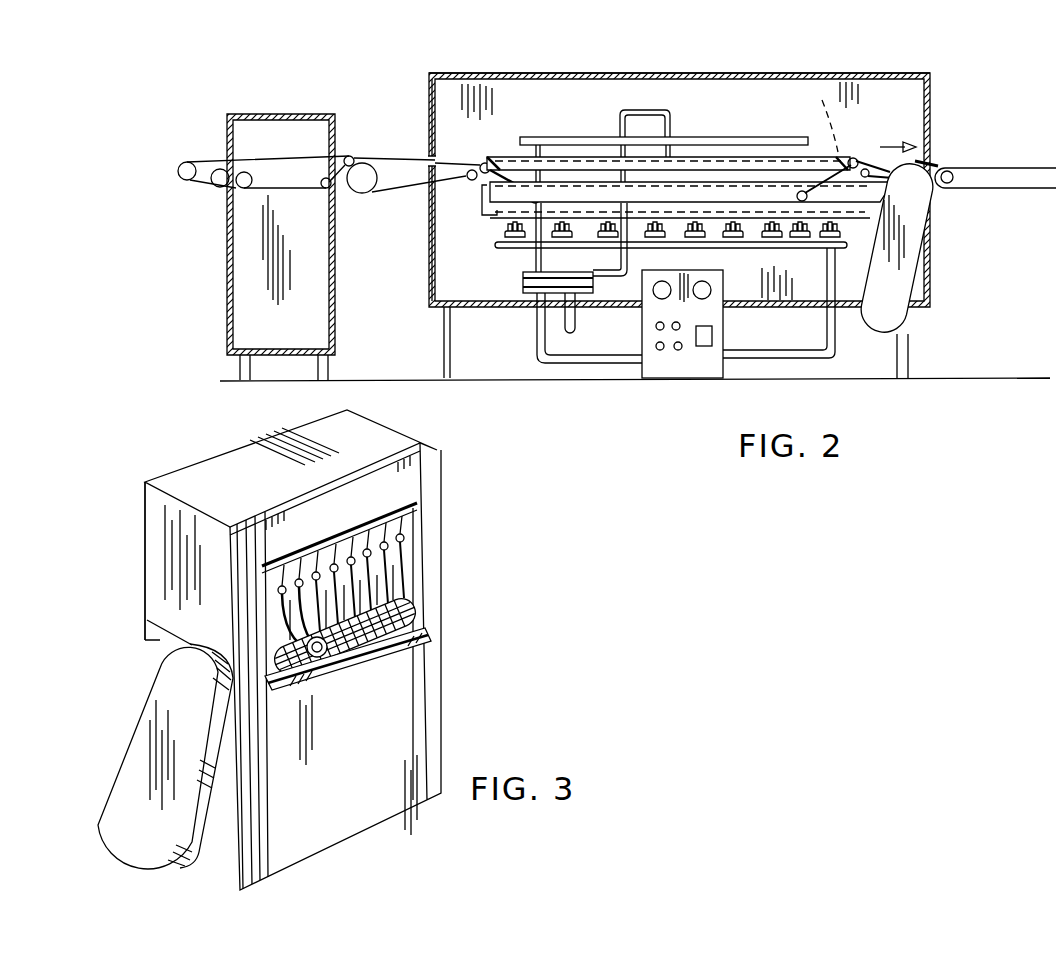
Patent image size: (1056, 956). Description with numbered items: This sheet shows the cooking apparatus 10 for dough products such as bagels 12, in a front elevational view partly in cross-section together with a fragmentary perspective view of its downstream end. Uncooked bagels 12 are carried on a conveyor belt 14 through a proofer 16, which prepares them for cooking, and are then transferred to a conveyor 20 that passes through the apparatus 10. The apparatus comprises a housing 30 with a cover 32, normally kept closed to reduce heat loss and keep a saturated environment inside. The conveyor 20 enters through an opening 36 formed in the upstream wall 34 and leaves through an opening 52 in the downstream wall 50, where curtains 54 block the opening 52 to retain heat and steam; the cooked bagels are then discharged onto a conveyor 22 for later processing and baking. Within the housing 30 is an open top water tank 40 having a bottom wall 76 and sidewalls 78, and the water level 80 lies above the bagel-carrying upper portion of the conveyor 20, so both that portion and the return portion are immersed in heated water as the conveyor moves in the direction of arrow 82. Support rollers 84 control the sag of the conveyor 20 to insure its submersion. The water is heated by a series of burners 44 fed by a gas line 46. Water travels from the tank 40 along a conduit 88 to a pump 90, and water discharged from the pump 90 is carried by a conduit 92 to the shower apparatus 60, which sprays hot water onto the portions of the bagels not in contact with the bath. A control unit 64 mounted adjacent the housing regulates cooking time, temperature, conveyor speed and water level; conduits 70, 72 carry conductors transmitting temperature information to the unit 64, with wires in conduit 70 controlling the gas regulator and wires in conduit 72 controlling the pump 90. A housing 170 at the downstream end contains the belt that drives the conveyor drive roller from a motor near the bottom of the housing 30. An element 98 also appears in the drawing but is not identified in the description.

In FIG. 2, the cooking apparatus 10 is at (833, 72).
In FIG. 3, the bagels 12 is at (324, 680).
In FIG. 2, the conveyor belt 14 is at (199, 157).
In FIG. 2, the proofer 16 is at (227, 245).
In FIG. 2, the conveyor 20 is at (388, 158).
In FIG. 3, the conveyor 20 is at (418, 620).
In FIG. 2, the conveyor 22 is at (998, 167).
In FIG. 2, the housing 30 is at (429, 270).
In FIG. 3, the housing 30 is at (150, 647).
In FIG. 2, the cover 32 is at (428, 92).
In FIG. 3, the cover 32 is at (372, 440).
In FIG. 2, the upstream wall 34 is at (429, 222).
In FIG. 2, the opening 36 is at (428, 158).
In FIG. 2, the water tank 40 is at (873, 222).
In FIG. 2, the burners 44 is at (753, 237).
In FIG. 2, the gas line 46 is at (762, 240).
In FIG. 3, the downstream wall 50 is at (437, 482).
In FIG. 2, the opening 52 is at (932, 148).
In FIG. 3, the opening 52 is at (301, 589).
In FIG. 3, the curtains 54 is at (392, 564).
In FIG. 2, the shower apparatus 60 is at (703, 131).
In FIG. 2, the control unit 64 is at (668, 372).
In FIG. 2, the conduit 70 is at (768, 362).
In FIG. 2, the conduit 72 is at (588, 364).
In FIG. 2, the bottom wall 76 is at (484, 222).
In FIG. 2, the sidewalls 78 is at (481, 200).
In FIG. 2, the water level 80 is at (821, 122).
In FIG. 2, the arrow 82 is at (892, 146).
In FIG. 2, the support rollers 84 is at (865, 169).
In FIG. 2, the conduit 88 is at (541, 256).
In FIG. 2, the pump 90 is at (523, 283).
In FIG. 2, the conduit 92 is at (630, 256).
In FIG. 2, the outlet 98 is at (577, 315).
In FIG. 2, the housing 170 is at (892, 312).
In FIG. 3, the housing 170 is at (138, 733).